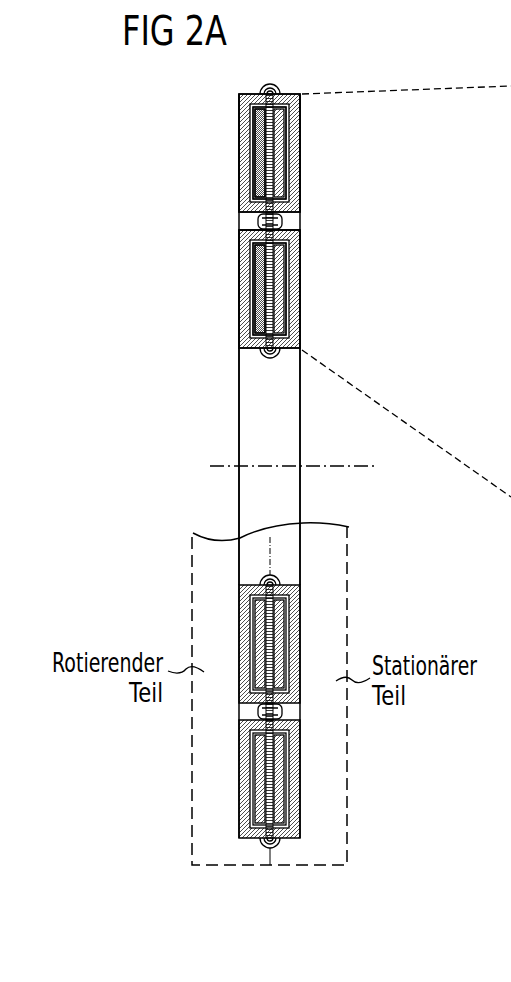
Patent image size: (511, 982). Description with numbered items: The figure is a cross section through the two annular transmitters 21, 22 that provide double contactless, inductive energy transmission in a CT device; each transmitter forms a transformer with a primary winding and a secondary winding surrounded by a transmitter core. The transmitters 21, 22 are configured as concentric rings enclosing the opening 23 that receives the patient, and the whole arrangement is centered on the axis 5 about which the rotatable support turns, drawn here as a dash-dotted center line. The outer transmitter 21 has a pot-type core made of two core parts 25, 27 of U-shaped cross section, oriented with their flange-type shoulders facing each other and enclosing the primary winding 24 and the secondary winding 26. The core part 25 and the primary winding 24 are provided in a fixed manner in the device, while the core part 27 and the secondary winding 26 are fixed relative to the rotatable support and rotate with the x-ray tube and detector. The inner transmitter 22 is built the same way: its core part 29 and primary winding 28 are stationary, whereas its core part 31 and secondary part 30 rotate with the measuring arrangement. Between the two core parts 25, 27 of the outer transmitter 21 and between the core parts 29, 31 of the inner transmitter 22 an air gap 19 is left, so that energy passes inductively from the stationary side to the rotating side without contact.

The axis 5 is at (330, 466).
The air gap 19 is at (258, 122).
The outer transmitter 21 is at (319, 96).
The inner transmitter 22 is at (319, 232).
The opening 23 is at (176, 352).
The primary winding 24 is at (282, 91).
The core part 25 is at (300, 94).
The secondary winding 26 is at (258, 150).
The core part 27 is at (241, 183).
The primary winding 28 is at (258, 300).
The core part 29 is at (302, 246).
The secondary part 30 is at (258, 272).
The core part 31 is at (241, 329).